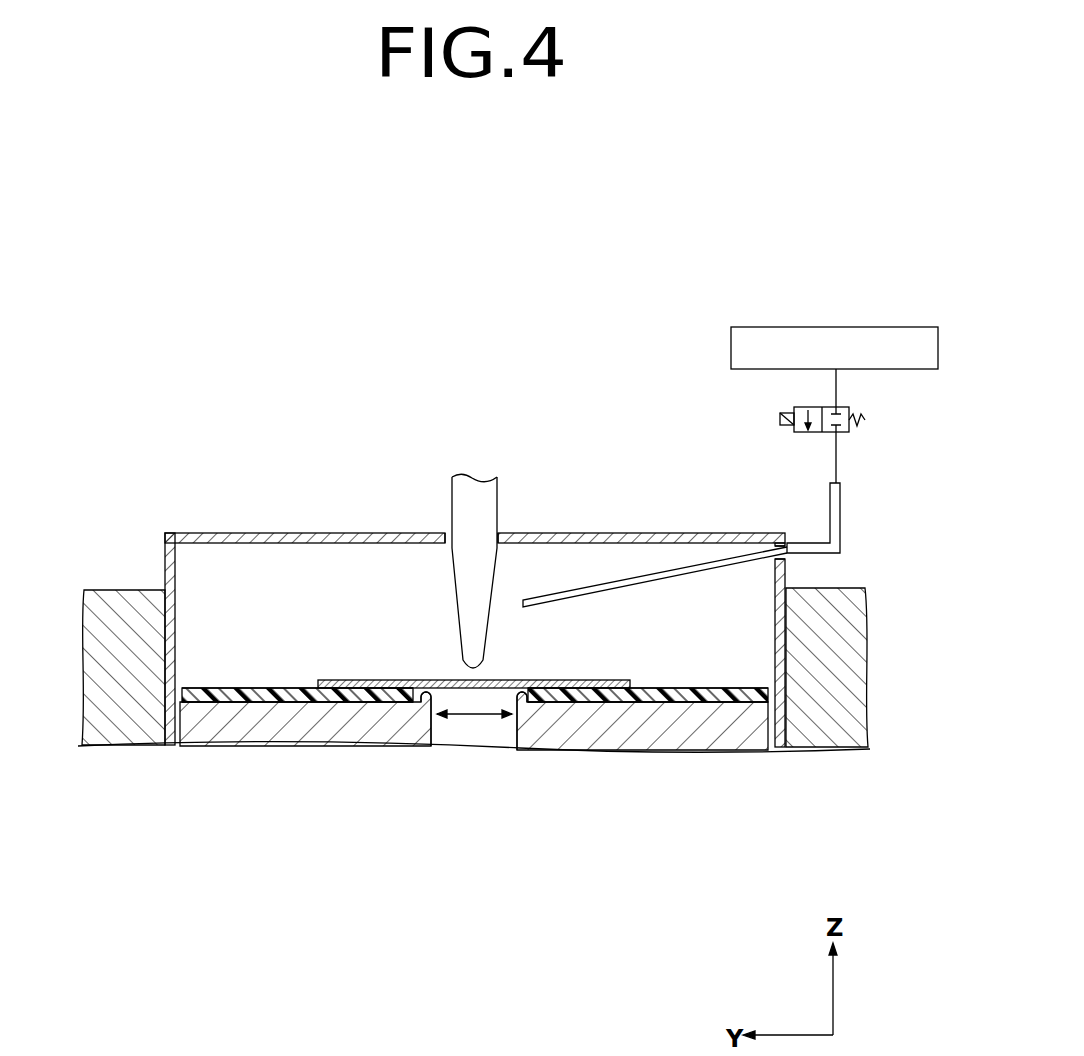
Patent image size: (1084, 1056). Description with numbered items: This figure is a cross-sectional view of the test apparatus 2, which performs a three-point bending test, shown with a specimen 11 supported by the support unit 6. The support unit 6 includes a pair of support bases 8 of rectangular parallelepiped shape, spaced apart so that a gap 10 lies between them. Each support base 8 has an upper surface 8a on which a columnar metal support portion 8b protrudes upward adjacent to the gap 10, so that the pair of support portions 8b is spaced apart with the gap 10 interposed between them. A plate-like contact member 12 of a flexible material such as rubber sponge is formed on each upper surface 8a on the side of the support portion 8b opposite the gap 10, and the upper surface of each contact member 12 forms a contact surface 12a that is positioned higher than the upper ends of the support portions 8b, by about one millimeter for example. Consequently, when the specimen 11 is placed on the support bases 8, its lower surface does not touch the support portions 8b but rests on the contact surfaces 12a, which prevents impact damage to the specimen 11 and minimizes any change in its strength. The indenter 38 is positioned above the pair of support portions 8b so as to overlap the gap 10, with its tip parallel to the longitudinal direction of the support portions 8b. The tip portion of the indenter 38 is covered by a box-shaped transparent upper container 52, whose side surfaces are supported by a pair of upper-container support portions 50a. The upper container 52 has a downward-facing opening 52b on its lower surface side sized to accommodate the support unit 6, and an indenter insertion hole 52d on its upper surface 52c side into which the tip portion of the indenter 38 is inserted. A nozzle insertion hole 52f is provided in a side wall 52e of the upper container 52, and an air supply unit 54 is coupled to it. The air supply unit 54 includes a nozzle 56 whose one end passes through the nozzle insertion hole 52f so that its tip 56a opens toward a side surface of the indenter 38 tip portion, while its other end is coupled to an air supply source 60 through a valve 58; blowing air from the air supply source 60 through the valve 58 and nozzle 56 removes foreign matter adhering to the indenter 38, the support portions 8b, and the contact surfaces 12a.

The test apparatus 2 is at (280, 266).
The support unit 6 is at (180, 772).
The support bases 8 is at (258, 724).
The upper surface 8a is at (287, 700).
The support portion 8b is at (425, 742).
The gap 10 is at (478, 716).
The specimen 11 is at (383, 680).
The contact member 12 is at (212, 693).
The contact surface 12a is at (265, 690).
The indenter 38 is at (472, 485).
The upper-container support portion 50a is at (103, 610).
The upper container 52 is at (163, 528).
The opening 52b is at (455, 737).
The upper surface 52c is at (305, 532).
The indenter insertion hole 52d is at (502, 532).
The side wall 52e is at (786, 573).
The nozzle insertion hole 52f is at (772, 549).
The air supply unit 54 is at (863, 282).
The nozzle 56 is at (841, 500).
The tip 56a is at (517, 598).
The valve 58 is at (852, 410).
The air supply source 60 is at (830, 327).